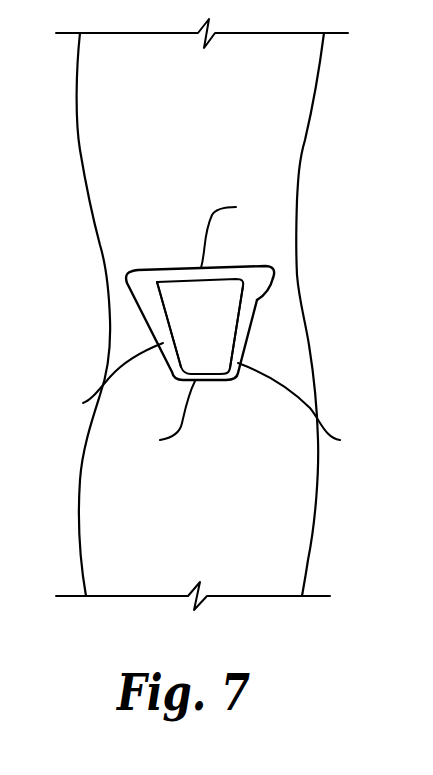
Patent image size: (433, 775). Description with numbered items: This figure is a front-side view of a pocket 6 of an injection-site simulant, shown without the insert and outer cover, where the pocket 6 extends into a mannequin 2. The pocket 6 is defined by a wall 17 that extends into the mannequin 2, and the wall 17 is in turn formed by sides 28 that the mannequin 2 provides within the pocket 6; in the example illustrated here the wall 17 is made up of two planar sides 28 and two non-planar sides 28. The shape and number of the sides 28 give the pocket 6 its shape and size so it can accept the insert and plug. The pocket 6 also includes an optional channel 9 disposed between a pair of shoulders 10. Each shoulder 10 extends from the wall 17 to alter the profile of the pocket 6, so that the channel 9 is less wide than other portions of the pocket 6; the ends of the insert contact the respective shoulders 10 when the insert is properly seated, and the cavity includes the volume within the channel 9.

The mannequin 2 is at (126, 226).
The pocket 6 is at (126, 278).
The channel 9 is at (212, 331).
The shoulder 10 is at (152, 303).
The wall 17 is at (255, 310).
The side 28 is at (209, 326).